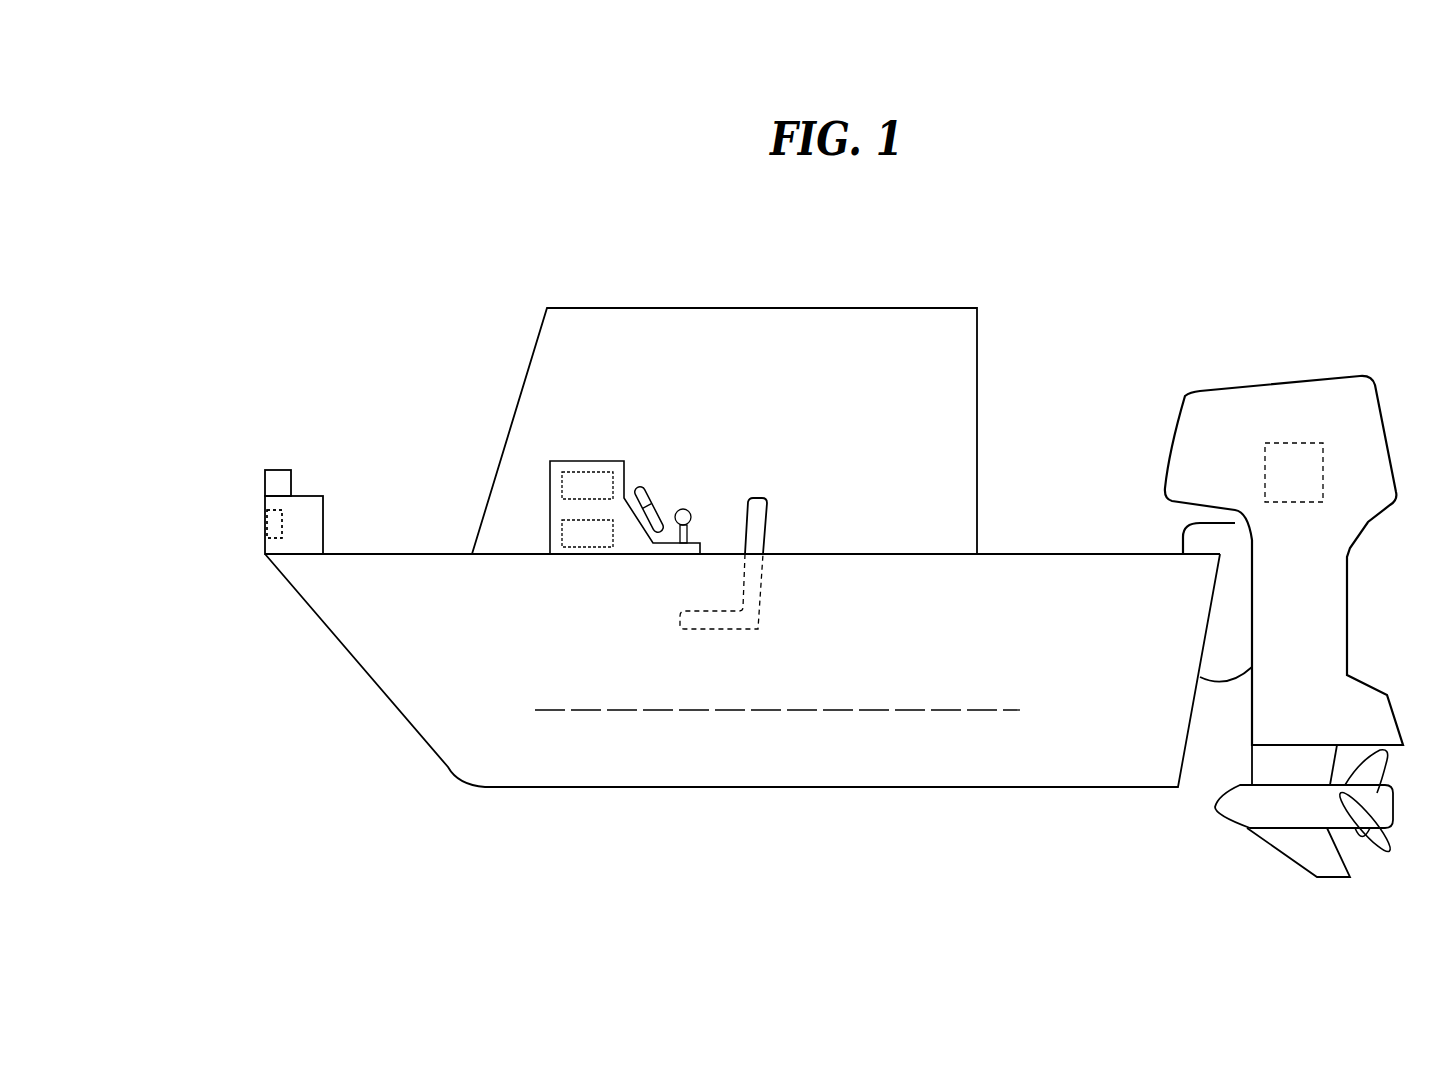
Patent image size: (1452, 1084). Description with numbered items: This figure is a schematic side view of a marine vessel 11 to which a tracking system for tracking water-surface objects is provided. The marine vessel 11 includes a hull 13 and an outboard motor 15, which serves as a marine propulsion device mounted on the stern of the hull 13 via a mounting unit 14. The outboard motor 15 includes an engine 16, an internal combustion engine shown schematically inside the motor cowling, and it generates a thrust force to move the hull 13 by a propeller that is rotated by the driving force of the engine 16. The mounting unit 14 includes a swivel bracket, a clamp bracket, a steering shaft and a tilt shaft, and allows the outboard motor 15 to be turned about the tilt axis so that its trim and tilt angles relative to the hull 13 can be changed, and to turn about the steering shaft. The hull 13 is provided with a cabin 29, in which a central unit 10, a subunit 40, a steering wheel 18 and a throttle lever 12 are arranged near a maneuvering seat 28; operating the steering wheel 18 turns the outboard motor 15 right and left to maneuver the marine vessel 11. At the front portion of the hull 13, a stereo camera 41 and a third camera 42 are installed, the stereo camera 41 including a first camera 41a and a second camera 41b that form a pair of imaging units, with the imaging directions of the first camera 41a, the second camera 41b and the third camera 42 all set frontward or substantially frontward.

The marine vessel 11 is at (411, 252).
The hull 13 is at (1054, 538).
The cabin 29 is at (785, 307).
The stereo camera 41 is at (323, 491).
The third camera 42 is at (276, 469).
The first camera 41a is at (267, 523).
The second camera 41b is at (267, 523).
The subunit 40 is at (549, 531).
The central unit 10 is at (580, 471).
The steering wheel 18 is at (648, 491).
The throttle lever 12 is at (687, 508).
The maneuvering seat 28 is at (757, 497).
The outboard motor 15 is at (1306, 364).
The mounting unit 14 is at (1183, 527).
The engine 16 is at (1325, 459).